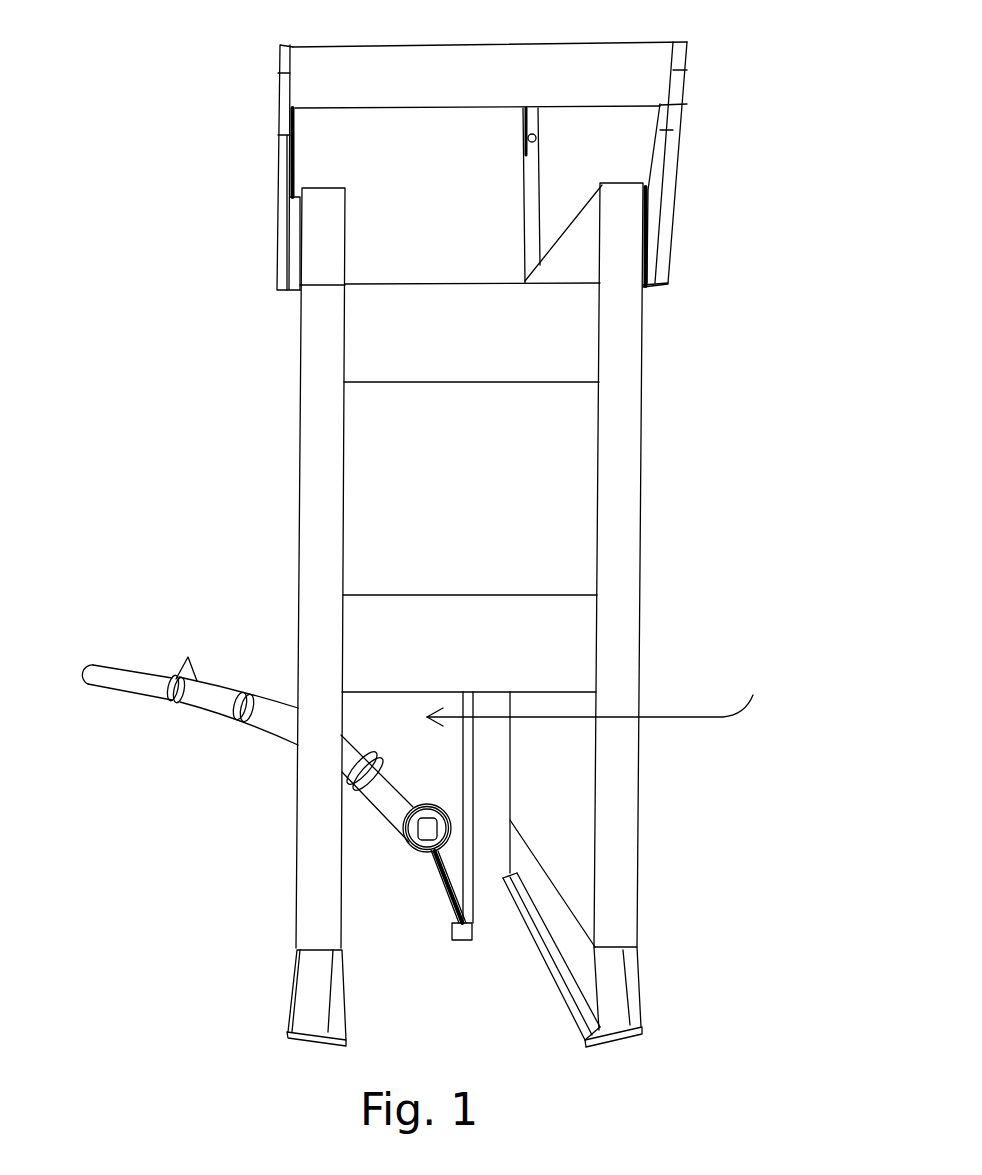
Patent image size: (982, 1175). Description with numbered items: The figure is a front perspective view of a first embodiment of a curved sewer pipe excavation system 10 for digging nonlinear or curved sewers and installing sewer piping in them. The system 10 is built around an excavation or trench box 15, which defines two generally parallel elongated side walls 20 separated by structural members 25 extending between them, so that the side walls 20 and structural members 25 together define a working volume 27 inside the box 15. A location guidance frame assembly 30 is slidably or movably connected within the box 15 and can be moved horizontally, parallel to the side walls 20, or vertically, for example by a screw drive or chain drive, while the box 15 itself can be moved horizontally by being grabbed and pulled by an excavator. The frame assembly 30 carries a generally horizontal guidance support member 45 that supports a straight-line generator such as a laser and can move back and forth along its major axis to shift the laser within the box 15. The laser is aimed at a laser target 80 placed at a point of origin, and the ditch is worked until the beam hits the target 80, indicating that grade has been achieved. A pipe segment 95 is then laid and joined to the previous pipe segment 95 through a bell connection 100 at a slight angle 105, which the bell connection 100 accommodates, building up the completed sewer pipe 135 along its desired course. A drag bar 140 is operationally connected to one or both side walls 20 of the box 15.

The system 10 is at (163, 925).
The excavation or trench box 15 is at (655, 402).
The side walls 20 is at (313, 803).
The structural members 25 is at (545, 622).
The working volume 27 is at (606, 697).
The location guidance frame assembly 30 is at (478, 672).
The guidance support member 45 is at (470, 897).
The laser target 80 is at (417, 857).
The pipe segment 95 is at (210, 705).
The bell connection 100 is at (430, 803).
The angle 105 is at (188, 657).
The sewer pipe 135 is at (118, 707).
The drag bar 140 is at (643, 60).